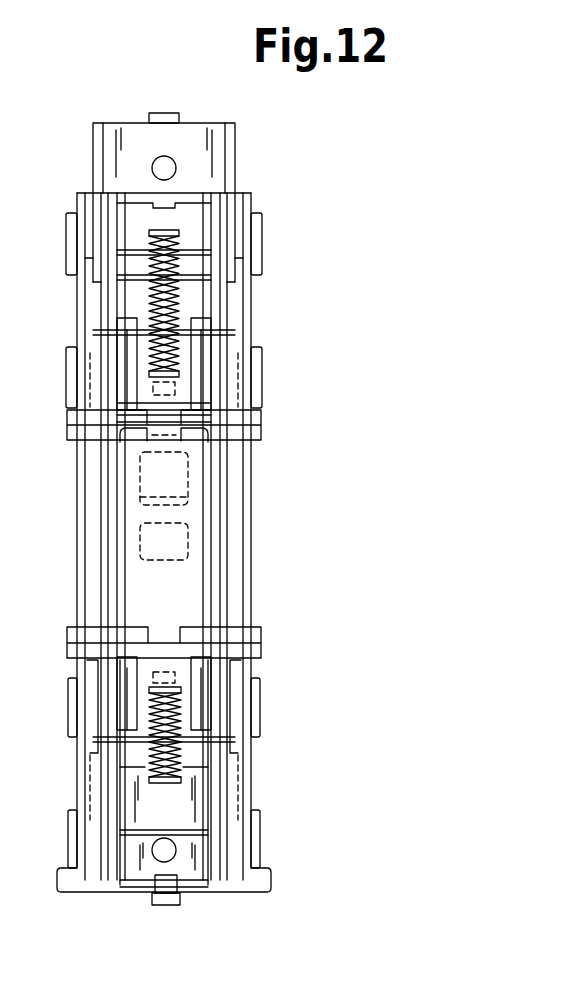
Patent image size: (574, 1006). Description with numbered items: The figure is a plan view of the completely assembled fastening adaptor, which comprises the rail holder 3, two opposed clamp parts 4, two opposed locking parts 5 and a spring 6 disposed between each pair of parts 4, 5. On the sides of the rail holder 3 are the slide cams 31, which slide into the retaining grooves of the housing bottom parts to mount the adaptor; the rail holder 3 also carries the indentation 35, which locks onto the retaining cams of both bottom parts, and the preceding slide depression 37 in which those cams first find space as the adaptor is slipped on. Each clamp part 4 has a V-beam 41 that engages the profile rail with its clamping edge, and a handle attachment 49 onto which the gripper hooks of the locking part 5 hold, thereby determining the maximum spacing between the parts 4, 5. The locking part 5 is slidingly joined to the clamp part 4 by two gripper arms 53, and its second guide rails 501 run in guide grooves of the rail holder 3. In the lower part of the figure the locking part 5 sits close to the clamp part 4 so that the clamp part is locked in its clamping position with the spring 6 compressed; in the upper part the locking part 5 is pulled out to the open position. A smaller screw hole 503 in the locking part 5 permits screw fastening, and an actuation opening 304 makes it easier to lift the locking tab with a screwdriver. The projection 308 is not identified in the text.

The rail holder 3 is at (253, 590).
The clamp part 4 is at (180, 392).
The locking part 5 is at (212, 178).
The spring 6 is at (173, 296).
The slide cams 31 is at (258, 225).
The indentation 35 is at (173, 542).
The slide depression 37 is at (173, 474).
The V-beam 41 is at (257, 433).
The handle attachment 49 is at (93, 334).
The gripper arms 53 is at (88, 293).
The actuation opening 304 is at (165, 891).
The top projection 308 is at (166, 112).
The second guide rails 501 is at (233, 812).
The hole 503 is at (172, 165).